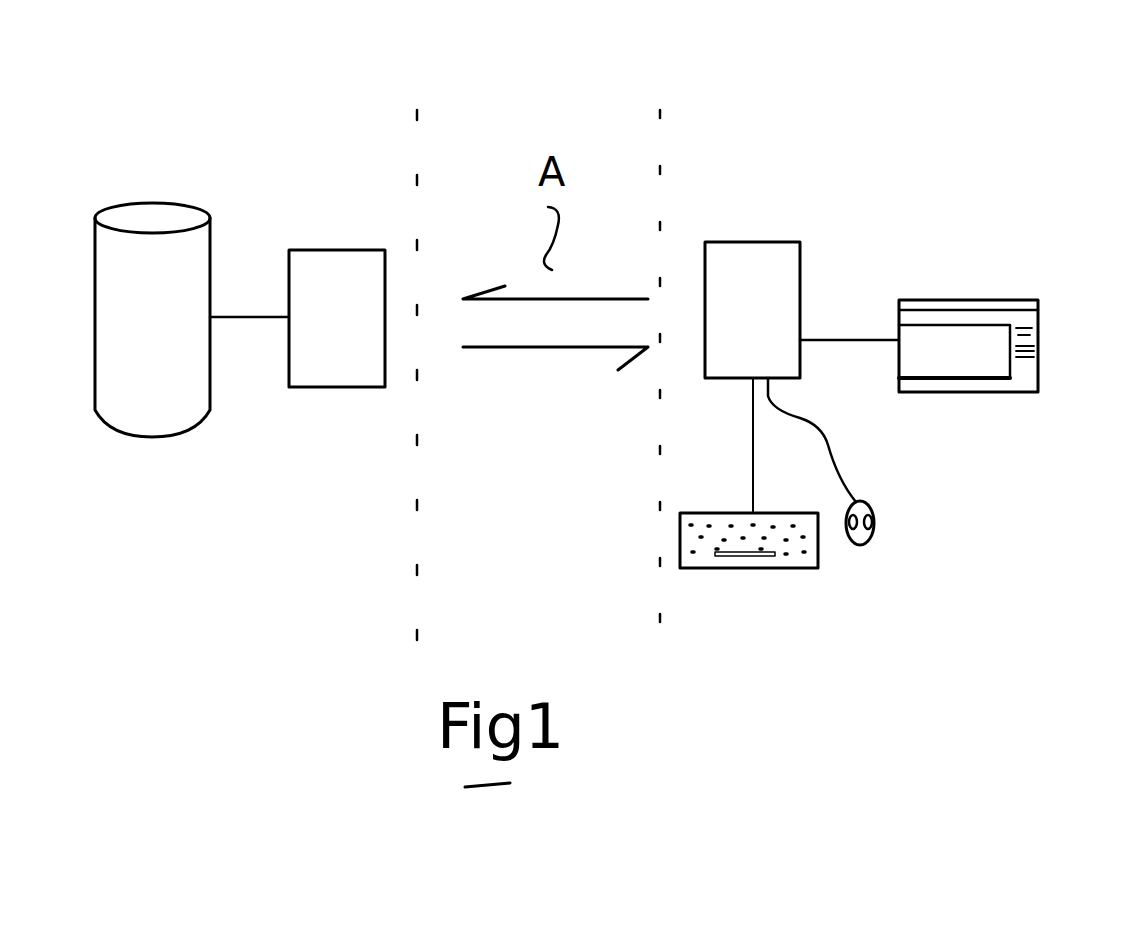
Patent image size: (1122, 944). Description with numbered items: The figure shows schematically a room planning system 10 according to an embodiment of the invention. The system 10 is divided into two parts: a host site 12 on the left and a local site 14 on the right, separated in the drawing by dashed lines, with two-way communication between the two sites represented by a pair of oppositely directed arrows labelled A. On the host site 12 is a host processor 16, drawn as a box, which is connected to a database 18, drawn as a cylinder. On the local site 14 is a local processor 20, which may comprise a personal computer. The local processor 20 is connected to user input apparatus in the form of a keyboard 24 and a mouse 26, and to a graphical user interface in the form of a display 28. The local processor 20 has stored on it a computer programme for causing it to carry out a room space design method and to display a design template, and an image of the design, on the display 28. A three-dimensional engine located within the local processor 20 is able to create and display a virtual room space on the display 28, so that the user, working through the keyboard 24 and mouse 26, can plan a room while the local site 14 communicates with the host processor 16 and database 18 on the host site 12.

The room planning system 10 is at (694, 797).
The host site 12 is at (255, 133).
The local site 14 is at (940, 130).
The host processor 16 is at (348, 337).
The database 18 is at (160, 343).
The local processor 20 is at (765, 333).
The keyboard 24 is at (797, 568).
The mouse 26 is at (875, 515).
The display 28 is at (993, 297).